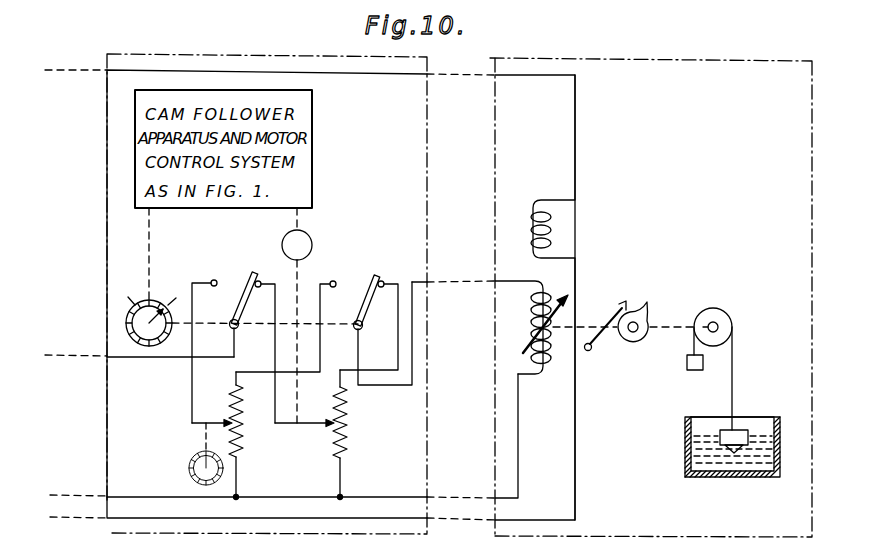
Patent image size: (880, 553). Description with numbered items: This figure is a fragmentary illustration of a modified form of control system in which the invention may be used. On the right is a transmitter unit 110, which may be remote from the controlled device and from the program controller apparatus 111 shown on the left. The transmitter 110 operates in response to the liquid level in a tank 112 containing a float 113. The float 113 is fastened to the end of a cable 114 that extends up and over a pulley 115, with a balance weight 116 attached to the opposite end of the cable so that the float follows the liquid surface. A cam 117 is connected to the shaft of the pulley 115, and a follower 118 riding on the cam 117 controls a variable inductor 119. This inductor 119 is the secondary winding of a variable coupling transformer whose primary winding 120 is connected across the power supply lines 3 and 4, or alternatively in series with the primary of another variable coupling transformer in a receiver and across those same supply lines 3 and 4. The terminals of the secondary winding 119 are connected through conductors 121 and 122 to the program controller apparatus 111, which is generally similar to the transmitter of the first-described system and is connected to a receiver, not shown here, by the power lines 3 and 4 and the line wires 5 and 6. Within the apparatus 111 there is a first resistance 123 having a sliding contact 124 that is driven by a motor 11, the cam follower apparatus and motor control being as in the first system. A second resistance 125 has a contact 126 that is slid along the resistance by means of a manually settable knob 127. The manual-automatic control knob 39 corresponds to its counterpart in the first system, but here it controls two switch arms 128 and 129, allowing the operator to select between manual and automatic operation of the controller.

The power supply line 3 is at (132, 70).
The power supply line 4 is at (118, 518).
The line wire 5 is at (107, 359).
The line wire 6 is at (83, 493).
The motor 11 is at (313, 243).
The manual-automatic control knob 39 is at (126, 324).
The transmitter unit 110 is at (735, 63).
The program controller apparatus 111 is at (106, 186).
The tank 112 is at (708, 447).
The float 113 is at (741, 428).
The cable 114 is at (733, 388).
The pulley 115 is at (728, 311).
The balance weight 116 is at (686, 369).
The cam 117 is at (634, 343).
The follower 118 is at (615, 308).
The variable inductor 119 is at (560, 342).
The primary winding 120 is at (549, 230).
The conductor 121 is at (464, 286).
The conductor 122 is at (453, 496).
The first resistance 123 is at (350, 410).
The sliding contact 124 is at (312, 425).
The resistance 125 is at (245, 437).
The contact 126 is at (222, 420).
The manually settable knob 127 is at (189, 465).
The switch arm 128 is at (372, 280).
The switch arm 129 is at (247, 274).